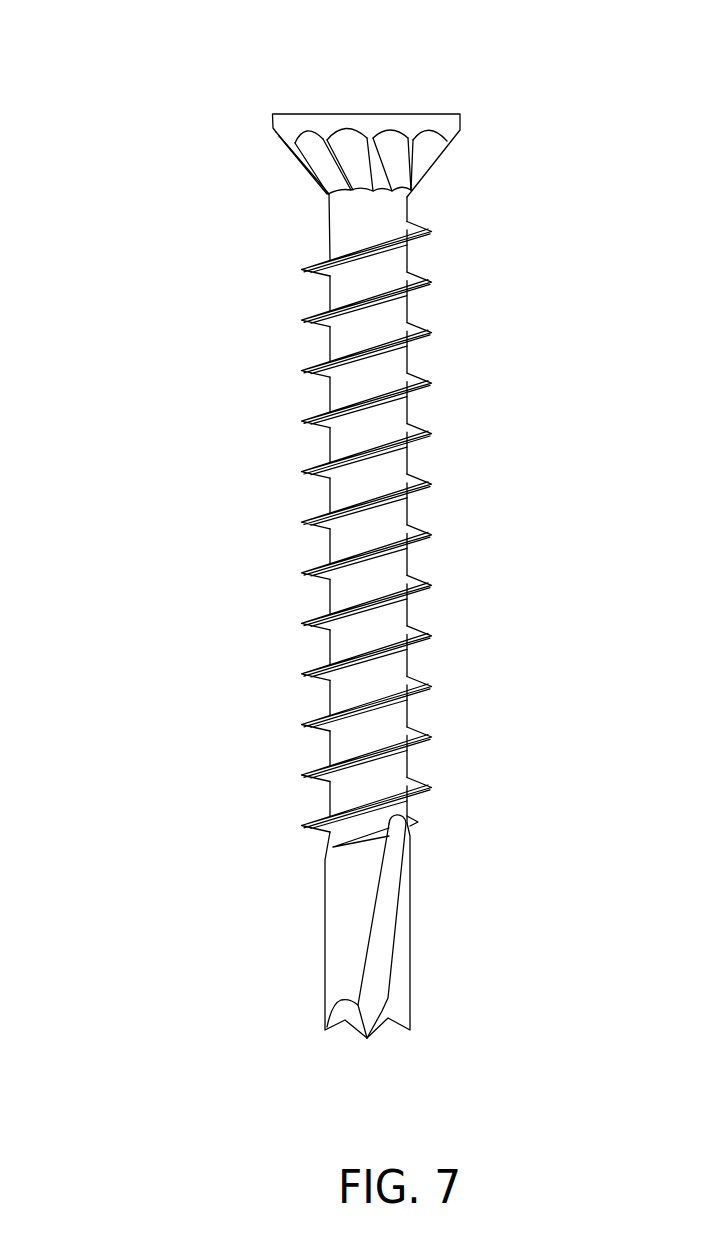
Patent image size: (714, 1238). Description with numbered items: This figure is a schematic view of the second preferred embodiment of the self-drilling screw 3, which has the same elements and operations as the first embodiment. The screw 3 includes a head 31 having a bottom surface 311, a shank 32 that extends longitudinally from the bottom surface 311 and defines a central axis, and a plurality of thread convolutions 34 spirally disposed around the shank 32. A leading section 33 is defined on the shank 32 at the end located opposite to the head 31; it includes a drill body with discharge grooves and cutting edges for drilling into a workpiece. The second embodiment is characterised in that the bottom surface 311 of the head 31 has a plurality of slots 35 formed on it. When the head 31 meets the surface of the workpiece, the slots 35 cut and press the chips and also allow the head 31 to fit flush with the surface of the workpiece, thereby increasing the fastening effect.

The self-drilling screw 3 is at (147, 142).
The head 31 is at (459, 101).
The bottom surface 311 is at (452, 142).
The slots 35 is at (422, 160).
The shank 32 is at (400, 312).
The leading section 33 is at (315, 909).
The thread convolutions 34 is at (317, 518).